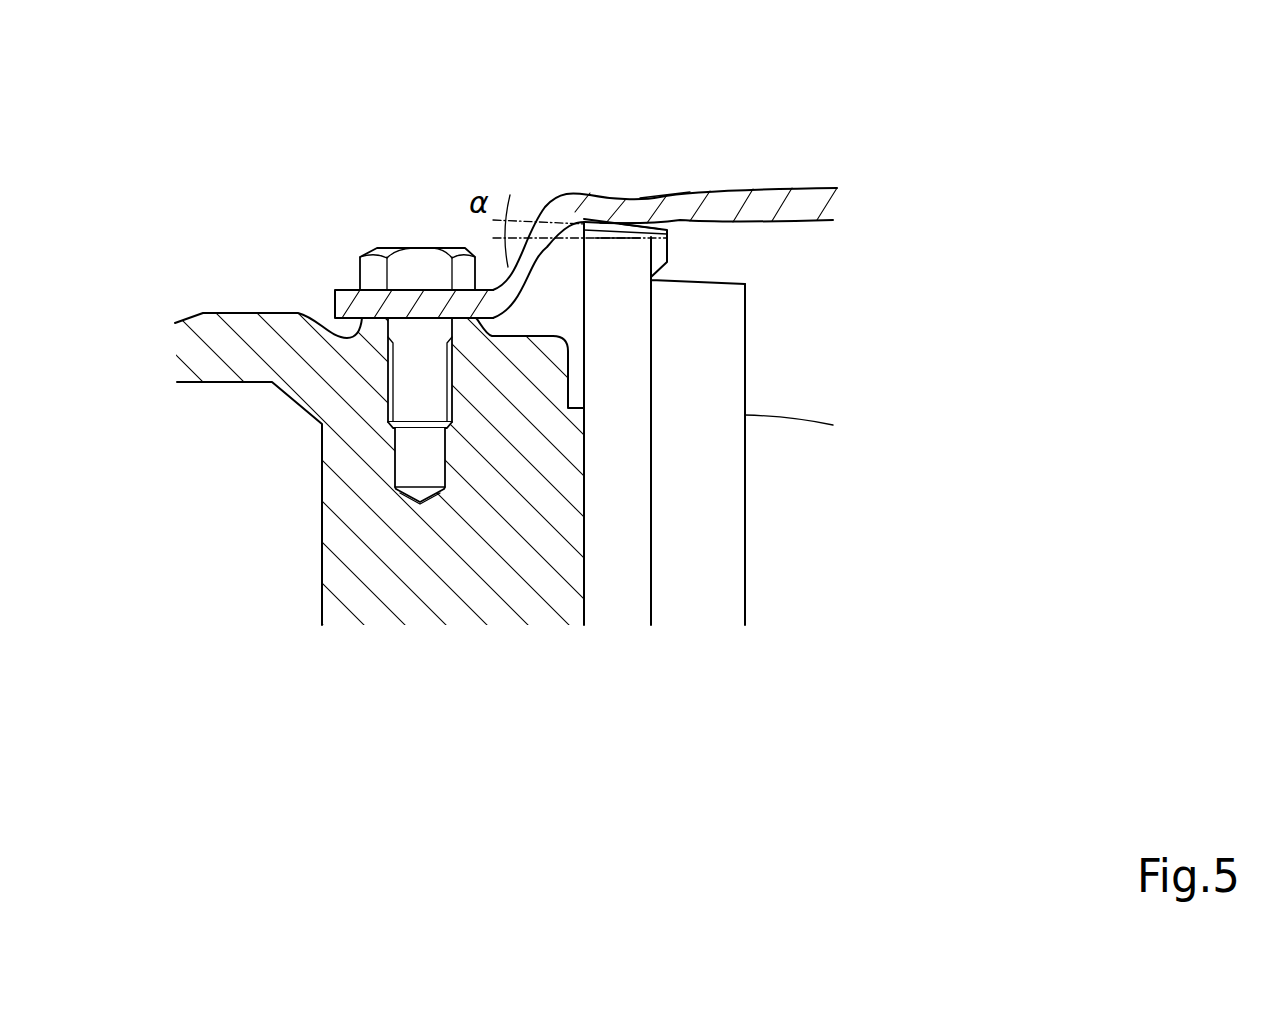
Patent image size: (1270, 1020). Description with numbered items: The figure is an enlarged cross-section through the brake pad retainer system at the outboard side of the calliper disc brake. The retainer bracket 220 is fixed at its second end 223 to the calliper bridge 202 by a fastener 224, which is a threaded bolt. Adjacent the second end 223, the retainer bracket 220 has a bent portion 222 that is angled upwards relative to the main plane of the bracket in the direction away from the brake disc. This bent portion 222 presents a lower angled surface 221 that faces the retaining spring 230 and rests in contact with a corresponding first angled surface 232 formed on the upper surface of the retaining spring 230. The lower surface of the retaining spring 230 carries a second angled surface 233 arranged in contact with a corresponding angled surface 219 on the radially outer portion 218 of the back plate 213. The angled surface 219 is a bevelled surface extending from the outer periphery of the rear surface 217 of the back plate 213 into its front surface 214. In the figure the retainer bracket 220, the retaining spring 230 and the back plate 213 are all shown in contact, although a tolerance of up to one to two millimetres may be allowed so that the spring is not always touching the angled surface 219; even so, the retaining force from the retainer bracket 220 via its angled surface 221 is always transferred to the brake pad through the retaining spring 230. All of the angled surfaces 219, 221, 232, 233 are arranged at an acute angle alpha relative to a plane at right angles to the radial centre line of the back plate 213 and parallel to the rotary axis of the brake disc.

The calliper bridge 202 is at (237, 312).
The second end 223 is at (343, 290).
The fastener 224 is at (435, 268).
The angled surface 219 is at (592, 215).
The retainer bracket 220 is at (808, 200).
The first angled surface 232 is at (618, 207).
The bent portion 222 is at (663, 172).
The retaining spring 230 is at (667, 231).
The angled surface 221 is at (638, 237).
The second angled surface 233 is at (615, 245).
The back plate 213 is at (623, 602).
The rear surface 217 is at (574, 542).
The front surface 214 is at (663, 487).
The radially outer portion 218 is at (700, 610).